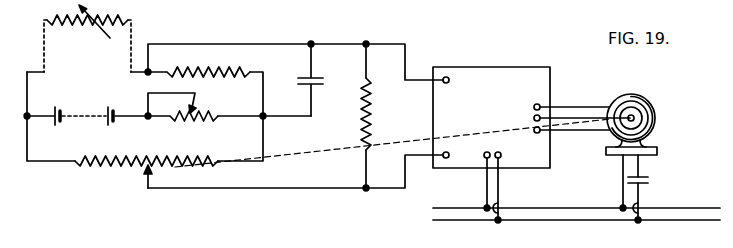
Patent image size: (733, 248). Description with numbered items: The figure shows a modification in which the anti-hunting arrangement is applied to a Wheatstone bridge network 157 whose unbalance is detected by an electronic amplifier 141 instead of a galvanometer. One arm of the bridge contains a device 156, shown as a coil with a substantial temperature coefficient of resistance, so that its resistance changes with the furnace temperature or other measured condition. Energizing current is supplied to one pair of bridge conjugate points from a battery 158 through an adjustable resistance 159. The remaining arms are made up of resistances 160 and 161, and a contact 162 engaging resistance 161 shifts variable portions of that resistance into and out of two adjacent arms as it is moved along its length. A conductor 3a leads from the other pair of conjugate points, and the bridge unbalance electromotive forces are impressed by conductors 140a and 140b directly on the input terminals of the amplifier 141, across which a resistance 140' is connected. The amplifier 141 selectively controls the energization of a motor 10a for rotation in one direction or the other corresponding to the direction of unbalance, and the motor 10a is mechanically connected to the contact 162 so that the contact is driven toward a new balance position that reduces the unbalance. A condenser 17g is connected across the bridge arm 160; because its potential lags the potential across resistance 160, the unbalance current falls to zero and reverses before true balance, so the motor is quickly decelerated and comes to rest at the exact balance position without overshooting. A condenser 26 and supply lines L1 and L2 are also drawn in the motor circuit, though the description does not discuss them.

The temperature-responsive resistance device 156 is at (93, 30).
The Wheatstone bridge network 157 is at (110, 84).
The battery 158 is at (88, 121).
The adjustable resistance 159 is at (197, 108).
The resistance 160 is at (214, 68).
The resistance 161 is at (172, 160).
The contact 162 is at (144, 172).
The conductor 3a is at (246, 44).
The condenser 17g is at (323, 80).
The resistance 140' is at (391, 114).
The conductor 140a is at (382, 44).
The conductor 140b is at (396, 189).
The electronic amplifier 141 is at (500, 76).
The motor 10a is at (651, 98).
The capacitor 26 is at (648, 180).
The supply line L2 is at (688, 208).
The supply line L1 is at (688, 220).